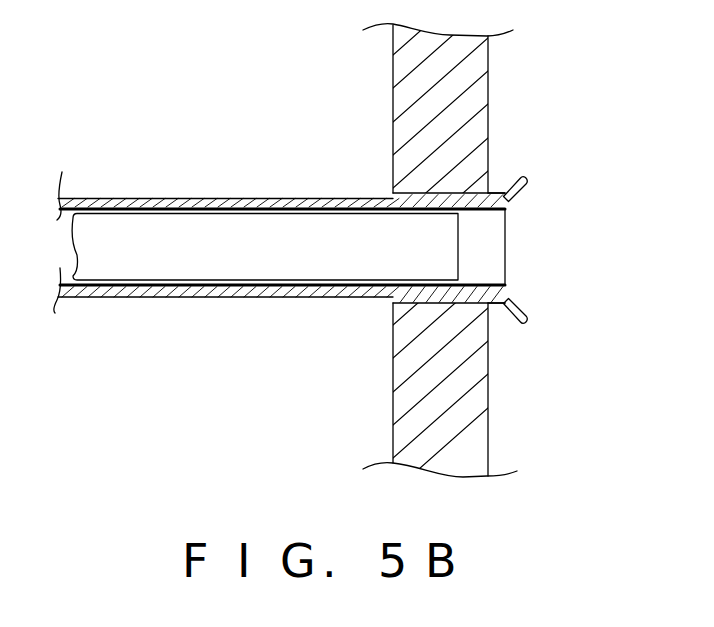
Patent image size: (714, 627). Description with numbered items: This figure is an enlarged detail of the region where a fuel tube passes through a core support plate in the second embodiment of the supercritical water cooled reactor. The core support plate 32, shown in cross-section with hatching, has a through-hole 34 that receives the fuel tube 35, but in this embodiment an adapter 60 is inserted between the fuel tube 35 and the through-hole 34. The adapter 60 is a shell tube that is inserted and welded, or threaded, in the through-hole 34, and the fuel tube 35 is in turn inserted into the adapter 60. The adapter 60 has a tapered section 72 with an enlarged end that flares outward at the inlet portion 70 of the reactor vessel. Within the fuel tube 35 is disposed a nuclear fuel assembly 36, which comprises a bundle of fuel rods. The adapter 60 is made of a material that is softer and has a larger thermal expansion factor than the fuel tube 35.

The core support plate 32 is at (468, 99).
The through-hole 34 is at (467, 307).
The fuel tube 35 is at (137, 198).
The nuclear fuel assembly 36 is at (236, 232).
The adapter 60 is at (518, 190).
The inlet portion 70 is at (562, 433).
The tapered section 72 is at (517, 302).